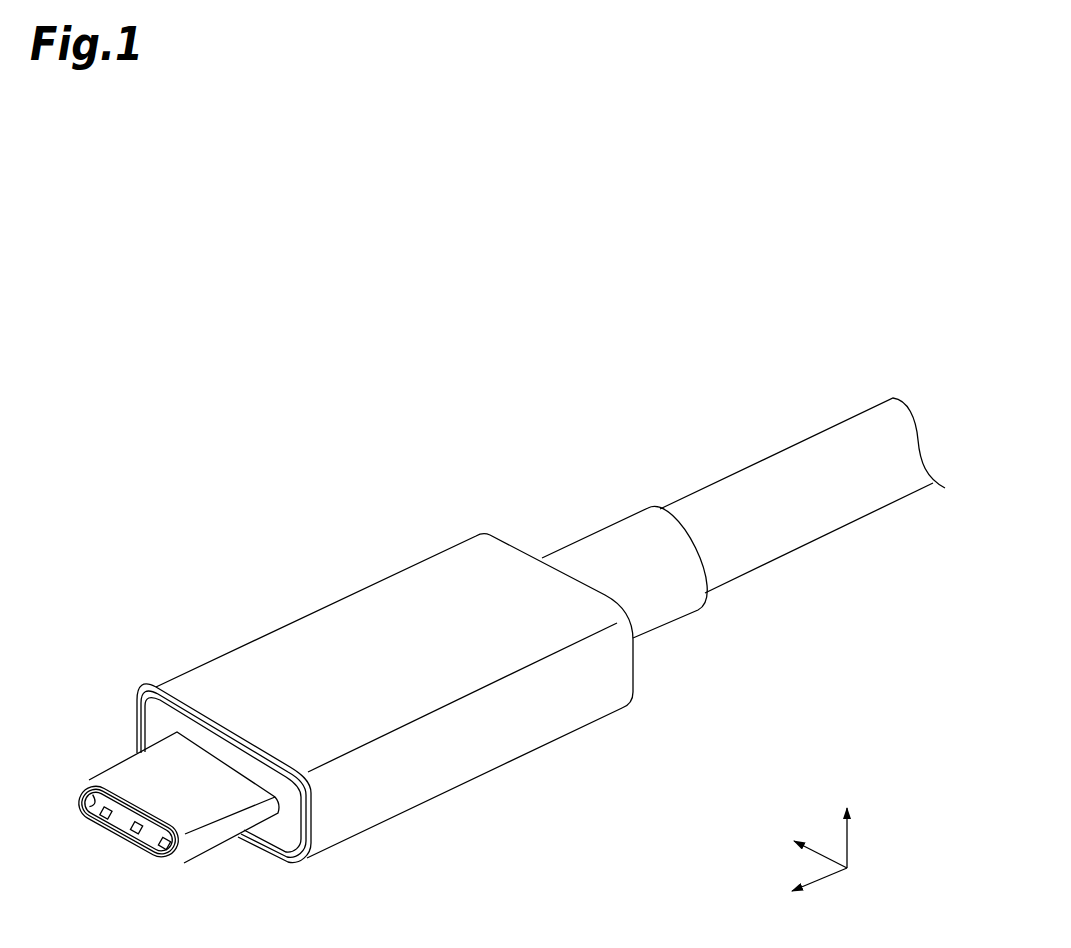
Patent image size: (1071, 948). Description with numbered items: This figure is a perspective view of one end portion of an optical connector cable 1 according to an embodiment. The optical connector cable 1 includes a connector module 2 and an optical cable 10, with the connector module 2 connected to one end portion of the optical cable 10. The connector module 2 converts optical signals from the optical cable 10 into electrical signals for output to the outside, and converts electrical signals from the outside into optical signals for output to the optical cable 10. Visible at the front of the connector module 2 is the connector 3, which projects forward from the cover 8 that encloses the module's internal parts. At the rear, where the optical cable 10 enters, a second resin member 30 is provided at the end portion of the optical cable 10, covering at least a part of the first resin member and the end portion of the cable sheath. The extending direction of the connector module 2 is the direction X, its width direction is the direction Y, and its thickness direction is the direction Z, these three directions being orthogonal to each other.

The optical connector cable 1 is at (229, 442).
The connector module 2 is at (292, 612).
The connector 3 is at (129, 781).
The cover 8 is at (443, 760).
The optical cable 10 is at (727, 468).
The second resin member 30 is at (657, 613).